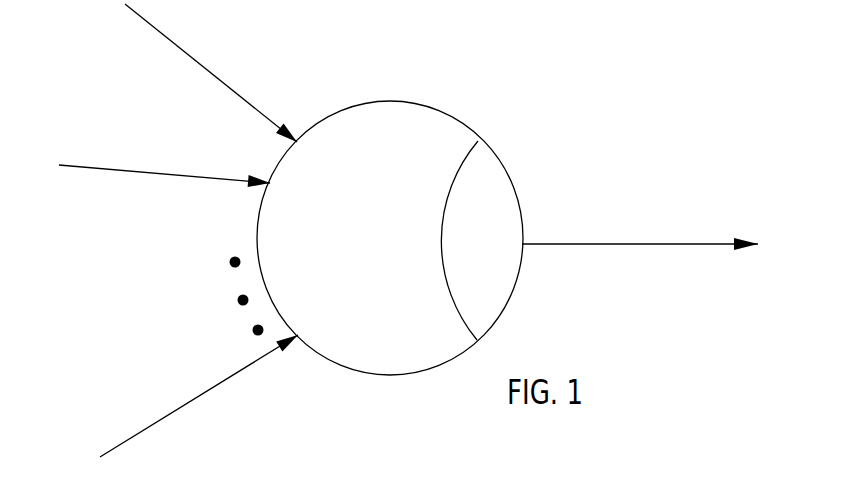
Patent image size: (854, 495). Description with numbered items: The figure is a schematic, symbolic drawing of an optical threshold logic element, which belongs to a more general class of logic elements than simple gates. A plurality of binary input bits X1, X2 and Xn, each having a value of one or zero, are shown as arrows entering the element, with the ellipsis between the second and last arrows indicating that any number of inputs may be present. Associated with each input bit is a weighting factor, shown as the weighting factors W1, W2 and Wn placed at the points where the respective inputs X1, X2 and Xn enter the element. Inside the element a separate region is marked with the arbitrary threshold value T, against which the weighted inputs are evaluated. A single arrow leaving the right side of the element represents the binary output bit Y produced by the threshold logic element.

The binary input bit X1 is at (196, 73).
The binary input bit X2 is at (149, 170).
The binary input bit Xn is at (188, 406).
The weighting factor W1 is at (315, 157).
The weighting factor W2 is at (289, 198).
The weighting factor Wn is at (312, 325).
The threshold value T is at (465, 240).
The binary output bit Y is at (648, 245).